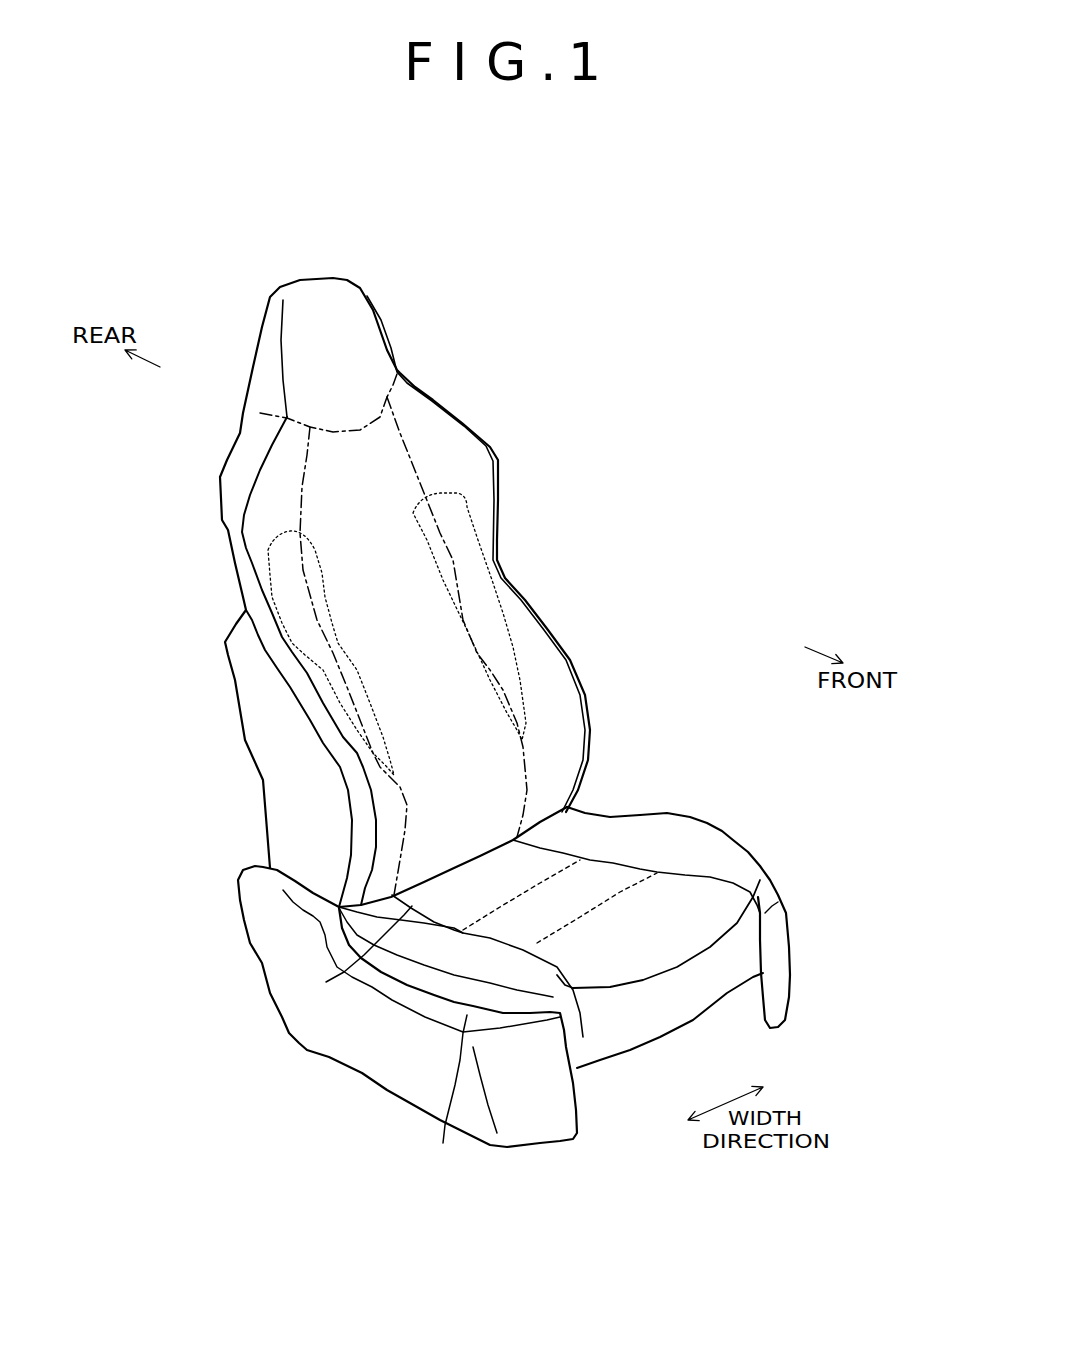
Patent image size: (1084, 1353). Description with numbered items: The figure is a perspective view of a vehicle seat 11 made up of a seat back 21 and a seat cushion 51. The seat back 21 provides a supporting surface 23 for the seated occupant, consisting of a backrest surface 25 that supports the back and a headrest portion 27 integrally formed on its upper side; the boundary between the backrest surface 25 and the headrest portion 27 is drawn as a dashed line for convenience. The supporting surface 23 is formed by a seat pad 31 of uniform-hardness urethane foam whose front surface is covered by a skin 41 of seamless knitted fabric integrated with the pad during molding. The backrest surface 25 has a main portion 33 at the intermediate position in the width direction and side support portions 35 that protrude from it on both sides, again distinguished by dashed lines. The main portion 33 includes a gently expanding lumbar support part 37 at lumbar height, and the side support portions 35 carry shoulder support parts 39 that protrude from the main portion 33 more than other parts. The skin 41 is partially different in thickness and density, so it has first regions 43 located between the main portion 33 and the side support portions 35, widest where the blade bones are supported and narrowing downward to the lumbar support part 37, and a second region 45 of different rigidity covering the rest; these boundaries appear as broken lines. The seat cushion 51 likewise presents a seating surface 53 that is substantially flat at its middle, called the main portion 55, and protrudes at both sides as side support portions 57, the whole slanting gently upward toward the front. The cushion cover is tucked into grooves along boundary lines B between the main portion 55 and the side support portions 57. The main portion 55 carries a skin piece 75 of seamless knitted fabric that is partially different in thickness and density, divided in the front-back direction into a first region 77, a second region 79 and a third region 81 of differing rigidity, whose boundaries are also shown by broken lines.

The vehicle seat 11 is at (412, 320).
The seat back 21 is at (257, 502).
The supporting surface 23 is at (435, 459).
The backrest surface 25 is at (489, 690).
The headrest portion 27 is at (327, 289).
The seat pad 31 is at (553, 737).
The main portion 33 is at (453, 643).
The side support portions 35 is at (327, 693).
The lumbar support part 37 is at (507, 785).
The shoulder support parts 39 is at (258, 563).
The skin 41 is at (343, 527).
The first regions 43 is at (293, 590).
The second region 45 is at (490, 727).
The seat cushion 51 is at (587, 1025).
The seating surface 53 is at (625, 946).
The main portion 55 is at (570, 877).
The side support portions 57 is at (667, 847).
The skin piece 75 is at (610, 877).
The first region 77 is at (339, 908).
The second region 79 is at (487, 938).
The third region 81 is at (687, 930).
The boundary lines B is at (705, 895).